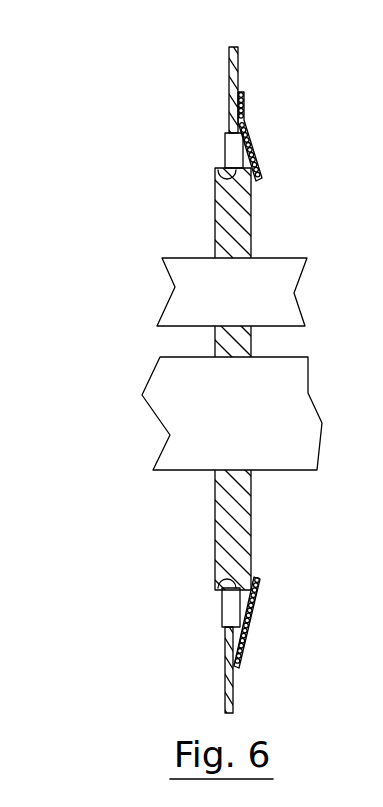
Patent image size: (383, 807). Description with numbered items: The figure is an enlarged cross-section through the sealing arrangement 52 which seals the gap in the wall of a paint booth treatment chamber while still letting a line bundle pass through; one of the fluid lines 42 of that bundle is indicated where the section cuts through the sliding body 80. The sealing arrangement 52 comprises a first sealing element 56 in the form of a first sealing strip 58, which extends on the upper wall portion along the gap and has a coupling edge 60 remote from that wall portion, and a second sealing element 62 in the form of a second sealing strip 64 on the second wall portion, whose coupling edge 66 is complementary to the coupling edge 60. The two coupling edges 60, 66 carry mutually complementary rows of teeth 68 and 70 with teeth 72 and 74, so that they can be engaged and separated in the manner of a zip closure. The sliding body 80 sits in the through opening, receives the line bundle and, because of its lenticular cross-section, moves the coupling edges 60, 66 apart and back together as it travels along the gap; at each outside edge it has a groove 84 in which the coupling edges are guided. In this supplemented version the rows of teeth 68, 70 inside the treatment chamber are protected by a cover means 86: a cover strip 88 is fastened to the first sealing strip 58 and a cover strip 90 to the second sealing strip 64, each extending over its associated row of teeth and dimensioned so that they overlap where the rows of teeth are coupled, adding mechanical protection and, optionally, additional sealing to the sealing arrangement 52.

The fluid lines 42 is at (301, 452).
The sealing arrangement 52 is at (104, 139).
The first sealing element 56 is at (224, 74).
The first sealing strip 58 is at (238, 84).
The coupling edge 60 is at (233, 170).
The second sealing element 62 is at (220, 693).
The second sealing strip 64 is at (237, 677).
The coupling edge 66 is at (233, 583).
The row of teeth 68 is at (185, 124).
The row of teeth 70 is at (181, 645).
The teeth 72 is at (232, 148).
The teeth 74 is at (228, 617).
The sliding body 80 is at (252, 232).
The groove 84 is at (222, 183).
The cover means 86 is at (304, 124).
The cover strip 88 is at (260, 150).
The cover strip 90 is at (243, 625).